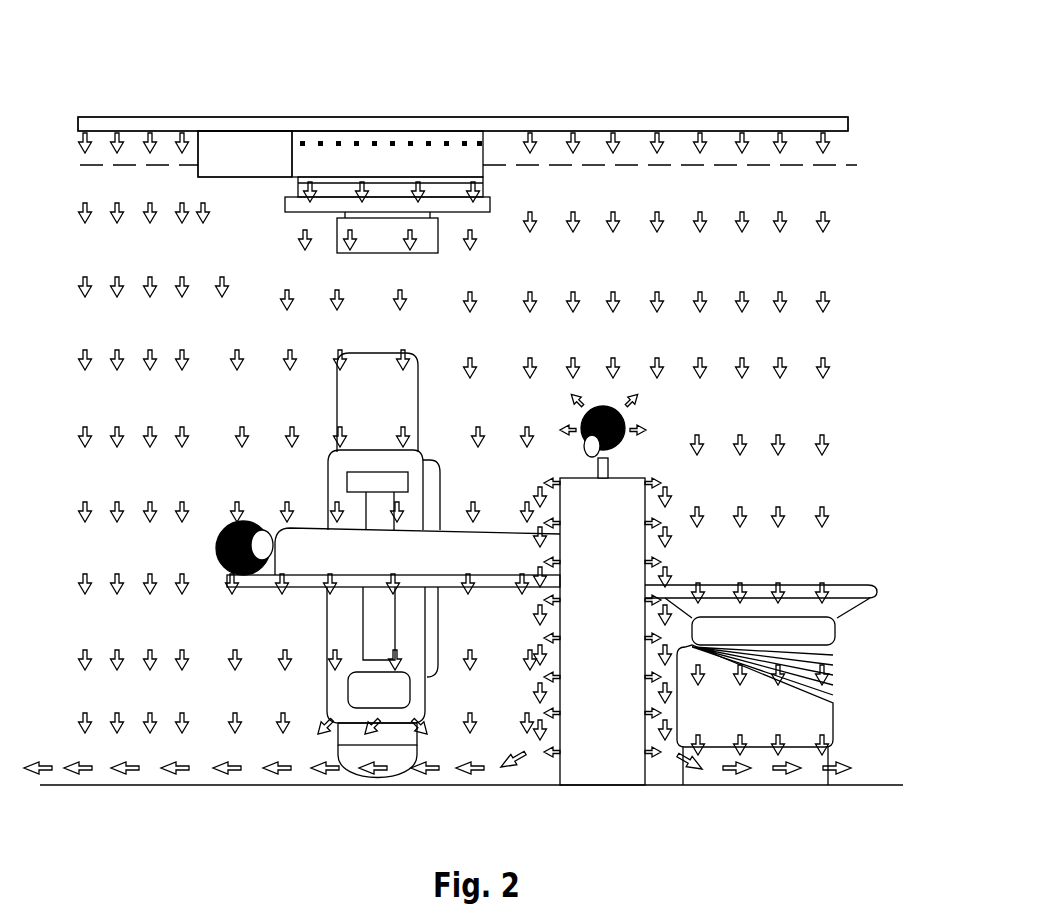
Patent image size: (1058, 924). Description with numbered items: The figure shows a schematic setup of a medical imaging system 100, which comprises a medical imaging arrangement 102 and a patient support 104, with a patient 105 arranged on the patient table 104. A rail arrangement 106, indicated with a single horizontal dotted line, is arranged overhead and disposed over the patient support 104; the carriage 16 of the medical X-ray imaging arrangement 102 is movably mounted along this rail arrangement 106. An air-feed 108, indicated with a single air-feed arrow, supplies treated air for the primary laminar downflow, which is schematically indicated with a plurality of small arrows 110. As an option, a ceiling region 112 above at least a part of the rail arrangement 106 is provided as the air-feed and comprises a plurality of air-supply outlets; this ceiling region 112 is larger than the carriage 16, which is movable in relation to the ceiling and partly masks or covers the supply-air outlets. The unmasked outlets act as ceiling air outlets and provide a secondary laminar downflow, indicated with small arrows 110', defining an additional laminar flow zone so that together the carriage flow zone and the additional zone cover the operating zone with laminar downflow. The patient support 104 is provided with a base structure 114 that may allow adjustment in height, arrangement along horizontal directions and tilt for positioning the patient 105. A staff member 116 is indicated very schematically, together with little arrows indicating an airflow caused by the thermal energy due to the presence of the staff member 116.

The medical imaging system 100 is at (838, 197).
The ceiling region 112 is at (593, 117).
The rail arrangement 106 is at (553, 164).
The air-feed 108 is at (458, 171).
The carriage 16 is at (268, 168).
The primary laminar downflow 110 is at (454, 174).
The secondary laminar downflow 110' is at (480, 534).
The medical imaging arrangement 102 is at (337, 410).
The patient support 104 is at (259, 582).
The patient 105 is at (278, 524).
The staff member 116 is at (662, 483).
The base structure 114 is at (820, 722).